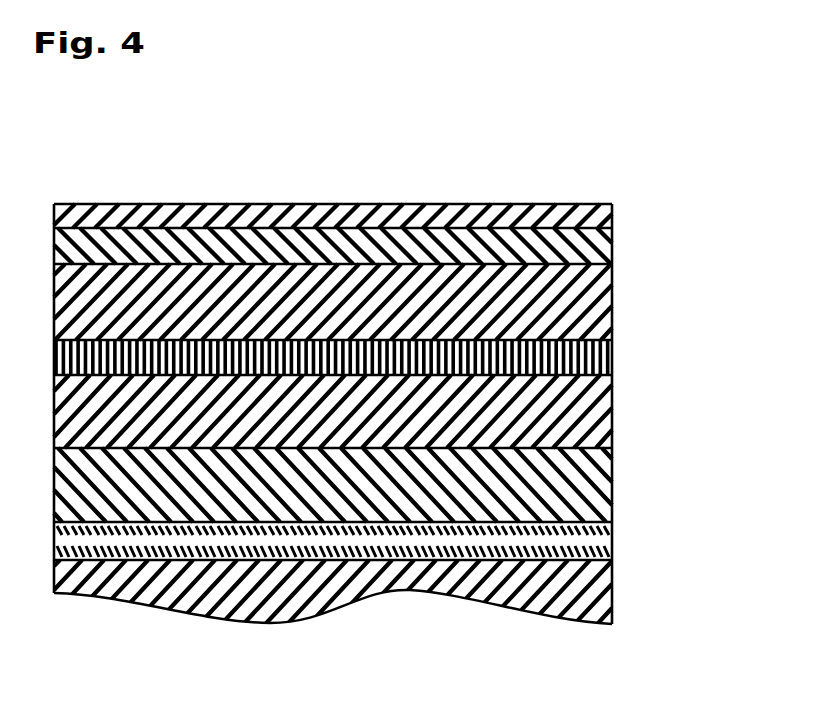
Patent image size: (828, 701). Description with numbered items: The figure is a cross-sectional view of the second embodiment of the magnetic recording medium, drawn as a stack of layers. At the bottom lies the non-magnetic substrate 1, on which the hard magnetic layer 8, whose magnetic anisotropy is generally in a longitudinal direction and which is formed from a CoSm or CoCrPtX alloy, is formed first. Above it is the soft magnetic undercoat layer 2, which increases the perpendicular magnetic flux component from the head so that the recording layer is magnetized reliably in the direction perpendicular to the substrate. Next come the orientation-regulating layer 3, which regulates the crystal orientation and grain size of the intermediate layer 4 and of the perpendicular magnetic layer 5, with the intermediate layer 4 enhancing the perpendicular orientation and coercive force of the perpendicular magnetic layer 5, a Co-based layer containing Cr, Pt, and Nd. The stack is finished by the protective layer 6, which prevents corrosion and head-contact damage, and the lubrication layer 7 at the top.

The non-magnetic substrate 1 is at (643, 575).
The soft magnetic undercoat layer 2 is at (636, 484).
The orientation-regulating layer 3 is at (635, 400).
The intermediate layer 4 is at (636, 350).
The perpendicular magnetic layer 5 is at (635, 306).
The protective layer 6 is at (634, 232).
The lubrication layer 7 is at (633, 203).
The hard magnetic layer 8 is at (642, 530).